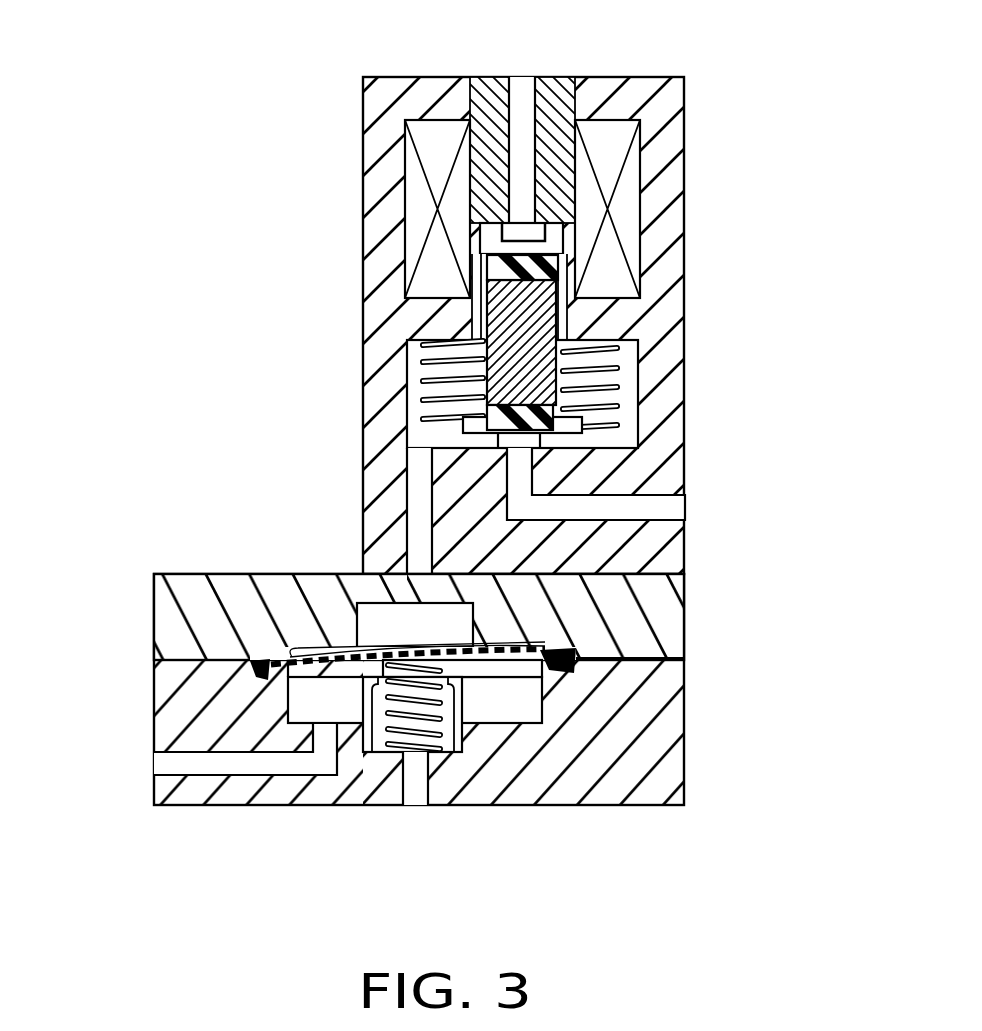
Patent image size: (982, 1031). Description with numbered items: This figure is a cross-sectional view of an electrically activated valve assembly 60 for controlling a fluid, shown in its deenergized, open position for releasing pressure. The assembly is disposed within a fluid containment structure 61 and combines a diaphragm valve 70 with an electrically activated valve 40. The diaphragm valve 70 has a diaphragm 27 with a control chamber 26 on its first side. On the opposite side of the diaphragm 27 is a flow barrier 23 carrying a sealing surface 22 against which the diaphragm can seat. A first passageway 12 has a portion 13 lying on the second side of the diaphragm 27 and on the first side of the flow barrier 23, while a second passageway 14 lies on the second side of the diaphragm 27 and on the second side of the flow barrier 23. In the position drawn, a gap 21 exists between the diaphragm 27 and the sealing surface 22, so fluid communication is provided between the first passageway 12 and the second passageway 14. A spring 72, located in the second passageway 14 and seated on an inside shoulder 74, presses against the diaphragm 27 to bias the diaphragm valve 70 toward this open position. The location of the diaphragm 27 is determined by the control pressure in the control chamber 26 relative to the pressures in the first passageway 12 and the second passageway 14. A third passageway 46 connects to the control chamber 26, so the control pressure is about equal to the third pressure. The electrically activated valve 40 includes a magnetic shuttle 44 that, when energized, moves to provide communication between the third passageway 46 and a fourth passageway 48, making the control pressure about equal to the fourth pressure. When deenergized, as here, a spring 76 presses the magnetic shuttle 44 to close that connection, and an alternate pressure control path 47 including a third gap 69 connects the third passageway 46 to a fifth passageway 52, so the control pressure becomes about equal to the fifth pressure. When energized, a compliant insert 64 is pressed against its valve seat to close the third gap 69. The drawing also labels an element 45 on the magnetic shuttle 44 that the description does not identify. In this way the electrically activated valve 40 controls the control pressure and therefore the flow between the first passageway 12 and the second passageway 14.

The first passageway 12 is at (238, 770).
The portion of first passageway 13 is at (165, 782).
The second passageway 14 is at (382, 740).
The gap 21 is at (290, 688).
The sealing surface 22 is at (543, 682).
The flow barrier 23 is at (290, 700).
The control chamber 26 is at (462, 618).
The diaphragm 27 is at (303, 643).
The electrically activated valve 40 is at (685, 183).
The magnetic shuttle 44 is at (530, 303).
The seal 45 is at (560, 268).
The third passageway 46 is at (407, 583).
The alternate pressure control path 47 is at (470, 302).
The fourth passageway 48 is at (662, 508).
The fifth passageway 52 is at (522, 88).
The electrically activated valve assembly 60 is at (282, 281).
The fluid containment structure 61 is at (155, 607).
The compliant insert 64 is at (484, 232).
The third gap 69 is at (523, 242).
The diaphragm valve 70 is at (702, 714).
The spring 72 is at (430, 723).
The inside shoulder 74 is at (422, 753).
The spring 76 is at (612, 354).